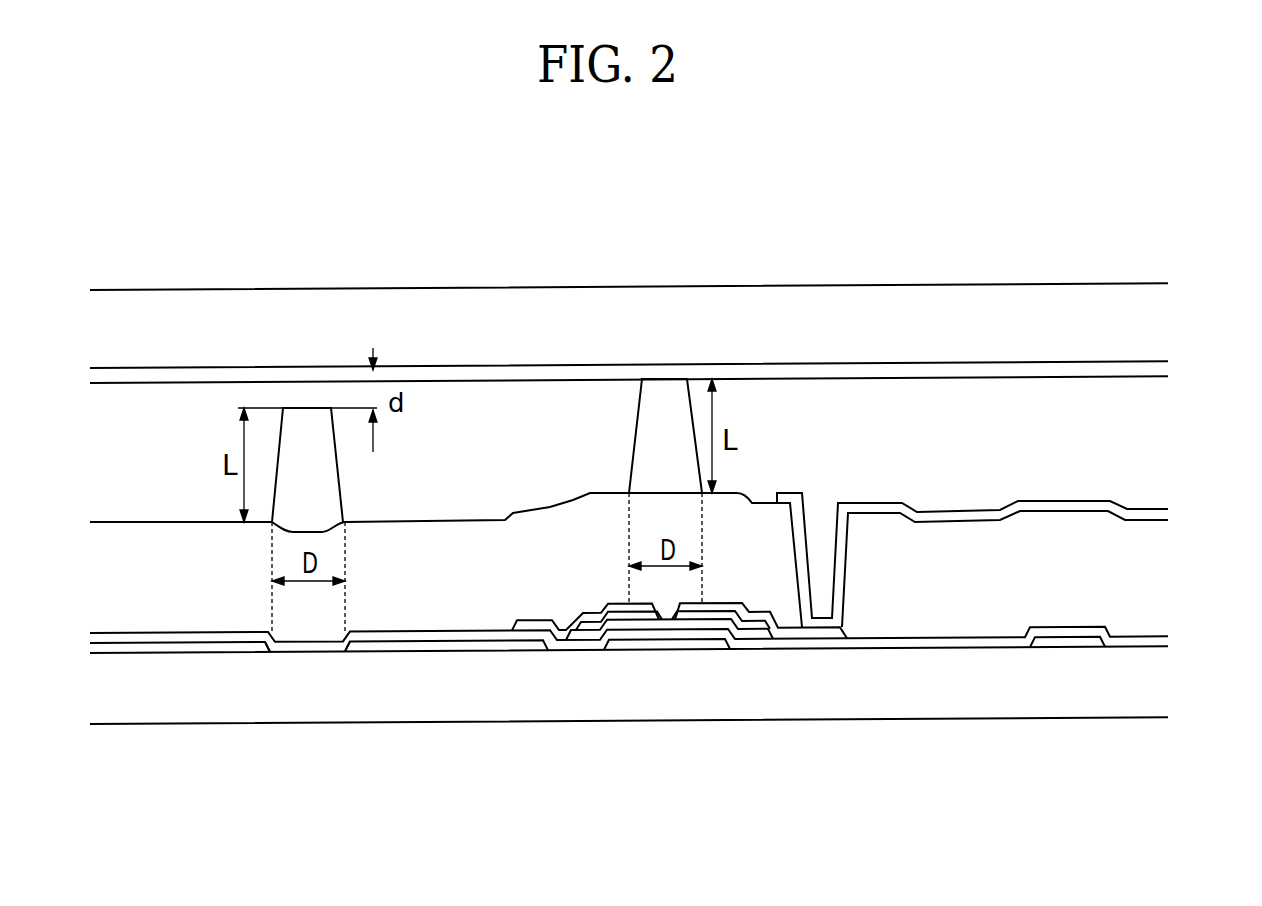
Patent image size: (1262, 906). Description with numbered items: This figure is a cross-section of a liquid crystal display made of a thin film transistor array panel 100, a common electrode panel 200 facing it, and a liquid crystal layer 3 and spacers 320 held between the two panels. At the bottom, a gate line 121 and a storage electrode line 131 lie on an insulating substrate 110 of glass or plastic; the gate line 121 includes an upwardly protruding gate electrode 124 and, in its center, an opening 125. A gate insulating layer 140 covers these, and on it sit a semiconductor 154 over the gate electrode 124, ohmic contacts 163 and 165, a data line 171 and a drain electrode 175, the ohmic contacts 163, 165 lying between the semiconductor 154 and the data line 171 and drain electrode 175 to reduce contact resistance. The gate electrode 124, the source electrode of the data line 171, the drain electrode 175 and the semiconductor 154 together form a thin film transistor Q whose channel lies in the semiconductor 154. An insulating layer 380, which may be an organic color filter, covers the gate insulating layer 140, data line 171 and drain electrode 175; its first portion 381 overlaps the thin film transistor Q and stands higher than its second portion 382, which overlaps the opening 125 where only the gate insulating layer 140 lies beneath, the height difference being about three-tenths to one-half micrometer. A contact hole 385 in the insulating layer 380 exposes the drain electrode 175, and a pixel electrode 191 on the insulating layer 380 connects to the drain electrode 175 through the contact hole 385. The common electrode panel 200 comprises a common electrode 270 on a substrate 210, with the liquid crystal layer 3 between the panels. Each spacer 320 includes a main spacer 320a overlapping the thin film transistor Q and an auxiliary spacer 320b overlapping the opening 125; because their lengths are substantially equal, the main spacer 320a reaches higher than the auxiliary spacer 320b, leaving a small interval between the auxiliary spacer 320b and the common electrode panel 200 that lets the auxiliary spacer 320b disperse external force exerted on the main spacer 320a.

The liquid crystal layer 3 is at (1194, 377).
The thin film transistor array panel 100 is at (1194, 497).
The substrate 110 is at (150, 712).
The gate line 121 is at (217, 648).
The gate electrode 124 is at (700, 645).
The opening 125 is at (268, 643).
The storage electrode line 131 is at (1067, 643).
The gate insulating layer 140 is at (414, 640).
The semiconductor 154 is at (601, 630).
The ohmic contact 163 is at (580, 627).
The ohmic contact 165 is at (757, 632).
The data line 171 is at (533, 628).
The drain electrode 175 is at (827, 630).
The pixel electrode 191 is at (958, 517).
The common electrode panel 200 is at (1194, 283).
The substrate 210 is at (210, 307).
The common electrode 270 is at (308, 377).
The spacer 320 is at (518, 208).
The main spacer 320a is at (633, 445).
The auxiliary spacer 320b is at (338, 472).
The insulating layer 380 is at (460, 592).
The first portion 381 is at (668, 593).
The second portion 382 is at (322, 612).
The contact hole 385 is at (848, 567).
The thin film transistor Q is at (738, 602).